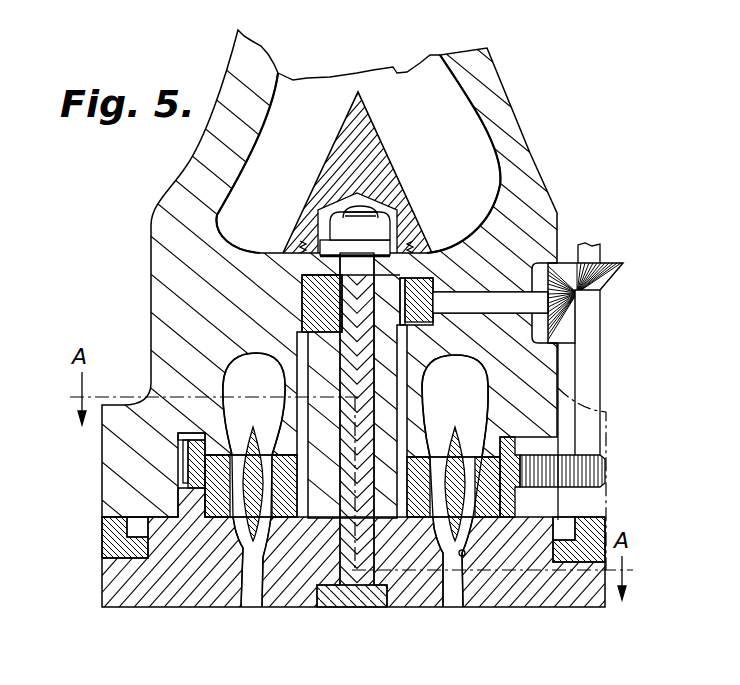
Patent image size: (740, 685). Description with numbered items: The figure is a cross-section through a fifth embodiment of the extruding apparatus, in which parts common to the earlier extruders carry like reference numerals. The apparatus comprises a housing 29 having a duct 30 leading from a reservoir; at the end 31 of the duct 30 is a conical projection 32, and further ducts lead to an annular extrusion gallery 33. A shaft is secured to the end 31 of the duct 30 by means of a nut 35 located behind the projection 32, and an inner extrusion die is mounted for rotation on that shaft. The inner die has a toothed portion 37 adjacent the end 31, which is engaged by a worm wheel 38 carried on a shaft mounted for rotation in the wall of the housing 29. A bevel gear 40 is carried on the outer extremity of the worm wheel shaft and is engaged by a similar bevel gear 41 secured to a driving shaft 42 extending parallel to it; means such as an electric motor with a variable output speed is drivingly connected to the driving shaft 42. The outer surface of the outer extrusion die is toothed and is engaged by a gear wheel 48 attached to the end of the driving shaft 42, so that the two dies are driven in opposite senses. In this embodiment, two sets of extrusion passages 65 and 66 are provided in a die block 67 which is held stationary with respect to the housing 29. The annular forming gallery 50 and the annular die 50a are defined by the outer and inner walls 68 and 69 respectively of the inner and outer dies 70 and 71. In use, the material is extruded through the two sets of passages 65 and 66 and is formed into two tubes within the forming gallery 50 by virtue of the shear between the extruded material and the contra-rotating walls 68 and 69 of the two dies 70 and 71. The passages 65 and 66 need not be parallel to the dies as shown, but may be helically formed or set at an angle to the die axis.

The housing 29 is at (142, 283).
The duct 30 is at (329, 78).
The end of the duct 31 is at (460, 177).
The conical projection 32 is at (366, 141).
The annular extrusion gallery 33 is at (272, 388).
The nut 35 is at (343, 229).
The toothed portion 37 is at (393, 283).
The worm wheel 38 is at (428, 287).
The bevel gear 40 is at (567, 333).
The bevel gear 41 is at (600, 262).
The driving shaft 42 is at (595, 430).
The gear wheel 48 is at (598, 473).
The annular forming gallery 50 is at (242, 590).
The annular die 50a is at (452, 607).
The extrusion passages 65 is at (270, 453).
The extrusion passages 66 is at (228, 448).
The die block 67 is at (290, 505).
The outer wall 68 is at (442, 558).
The inner wall 69 is at (465, 553).
The inner die 70 is at (300, 588).
The outer die 71 is at (157, 597).